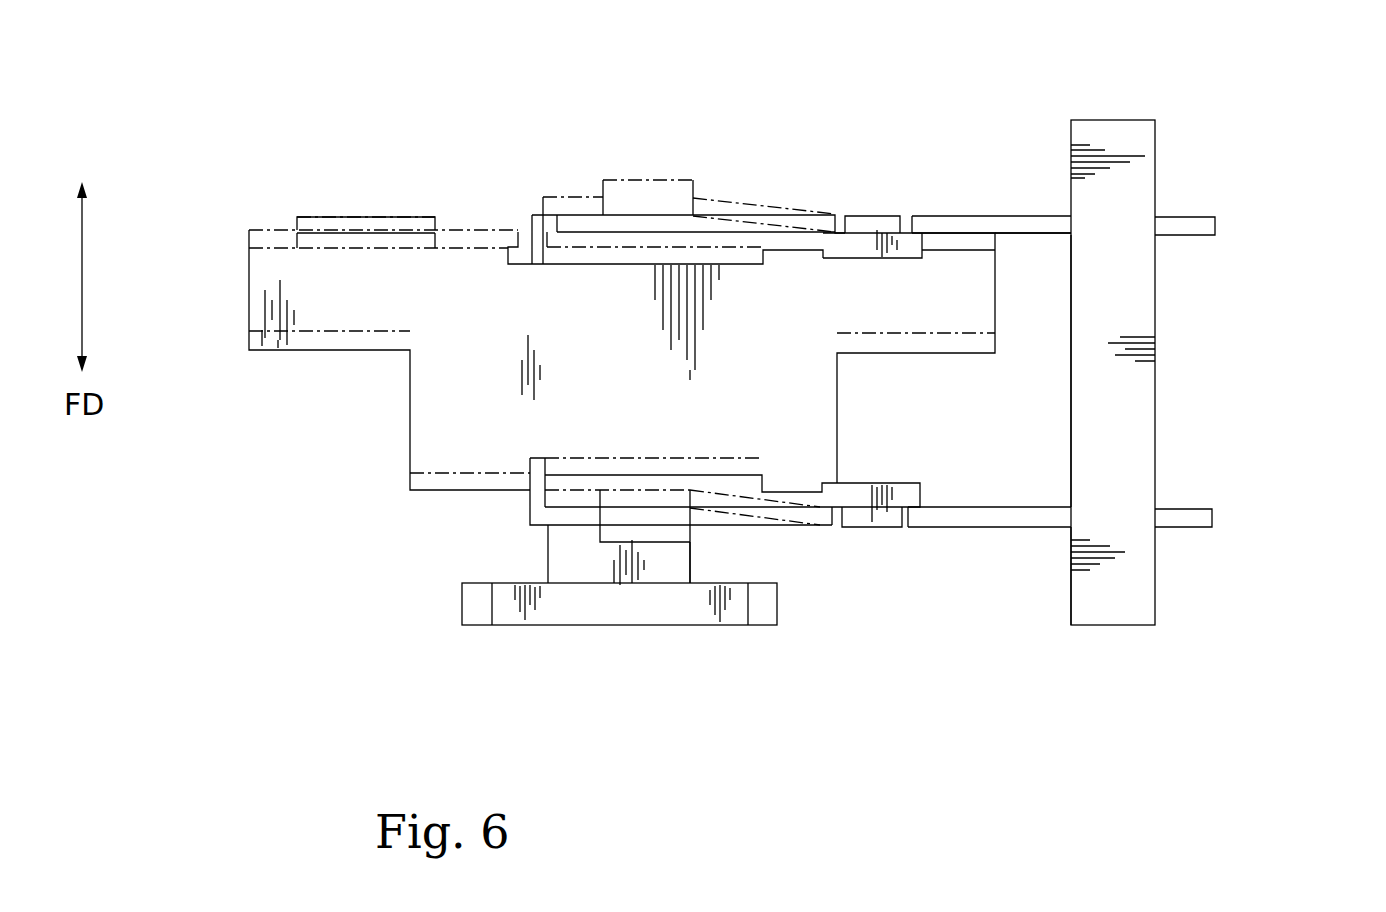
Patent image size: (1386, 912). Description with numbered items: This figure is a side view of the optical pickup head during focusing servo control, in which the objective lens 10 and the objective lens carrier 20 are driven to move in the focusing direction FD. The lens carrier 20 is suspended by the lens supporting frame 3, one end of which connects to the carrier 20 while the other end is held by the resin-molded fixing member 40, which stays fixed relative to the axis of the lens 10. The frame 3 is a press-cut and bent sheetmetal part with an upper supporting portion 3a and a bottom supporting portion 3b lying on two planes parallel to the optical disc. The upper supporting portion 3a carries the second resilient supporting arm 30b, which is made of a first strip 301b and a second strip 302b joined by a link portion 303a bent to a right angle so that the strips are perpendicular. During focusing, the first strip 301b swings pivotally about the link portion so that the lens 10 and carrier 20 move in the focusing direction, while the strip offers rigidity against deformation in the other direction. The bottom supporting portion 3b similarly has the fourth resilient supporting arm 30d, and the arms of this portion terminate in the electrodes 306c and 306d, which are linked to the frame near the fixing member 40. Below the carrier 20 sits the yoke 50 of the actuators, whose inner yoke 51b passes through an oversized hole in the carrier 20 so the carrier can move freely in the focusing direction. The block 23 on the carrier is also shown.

The objective lens 10 is at (356, 200).
The objective lens carrier 20 is at (345, 355).
The block 23 is at (648, 172).
The first strip 301b is at (738, 200).
The second strip 302b is at (885, 214).
The second resilient supporting arm 30b is at (969, 206).
The upper supporting portion 3a is at (1004, 189).
The link portion 303a is at (832, 248).
The lens supporting frame 3 is at (1051, 268).
The fixing member 40 is at (1138, 396).
The electrode 306c is at (1180, 224).
The electrode 306d is at (1196, 520).
The fourth resilient supporting arm 30d is at (966, 538).
The bottom supporting portion 3b is at (1032, 565).
The yoke 50 is at (675, 636).
The inner yoke 51b is at (560, 556).